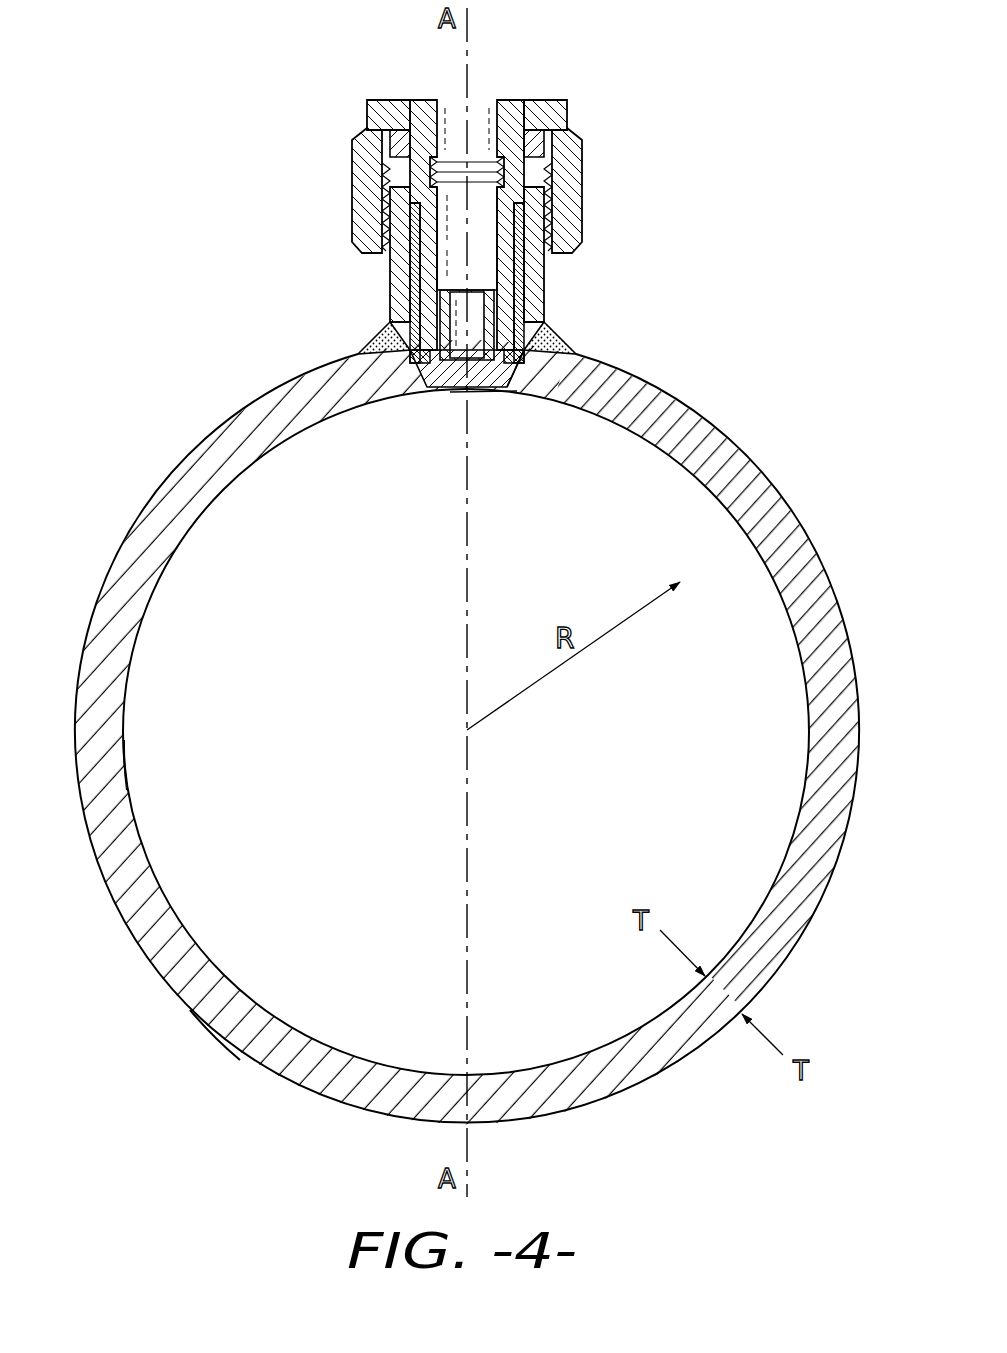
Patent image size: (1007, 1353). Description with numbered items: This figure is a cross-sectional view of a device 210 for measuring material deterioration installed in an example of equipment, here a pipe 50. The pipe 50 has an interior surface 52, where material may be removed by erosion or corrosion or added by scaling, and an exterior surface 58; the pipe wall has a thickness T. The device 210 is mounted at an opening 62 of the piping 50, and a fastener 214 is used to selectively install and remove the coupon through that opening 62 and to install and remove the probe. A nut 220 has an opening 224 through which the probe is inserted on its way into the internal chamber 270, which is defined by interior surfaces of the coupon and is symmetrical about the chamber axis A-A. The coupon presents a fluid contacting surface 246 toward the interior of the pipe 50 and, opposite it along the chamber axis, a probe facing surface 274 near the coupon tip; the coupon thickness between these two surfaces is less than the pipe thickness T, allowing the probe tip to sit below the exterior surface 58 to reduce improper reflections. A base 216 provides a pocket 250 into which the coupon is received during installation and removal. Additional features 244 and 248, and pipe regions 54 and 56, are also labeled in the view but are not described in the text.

The device 210 is at (214, 122).
The fastener 214 is at (326, 182).
The base 216 is at (546, 290).
The nut 220 is at (568, 118).
The opening 224 is at (489, 96).
The opening edge 244 is at (518, 393).
The fluid contacting surface 246 is at (450, 395).
The weld 248 is at (556, 330).
The pocket 250 is at (410, 288).
The internal chamber 270 is at (476, 236).
The probe facing surface 274 is at (438, 302).
The pipe 50 is at (726, 466).
The interior surface 52 is at (172, 665).
The pipe exterior 54 is at (210, 1173).
The inner surface 56 is at (128, 763).
The exterior surface 58 is at (212, 1040).
The opening 62 is at (487, 402).